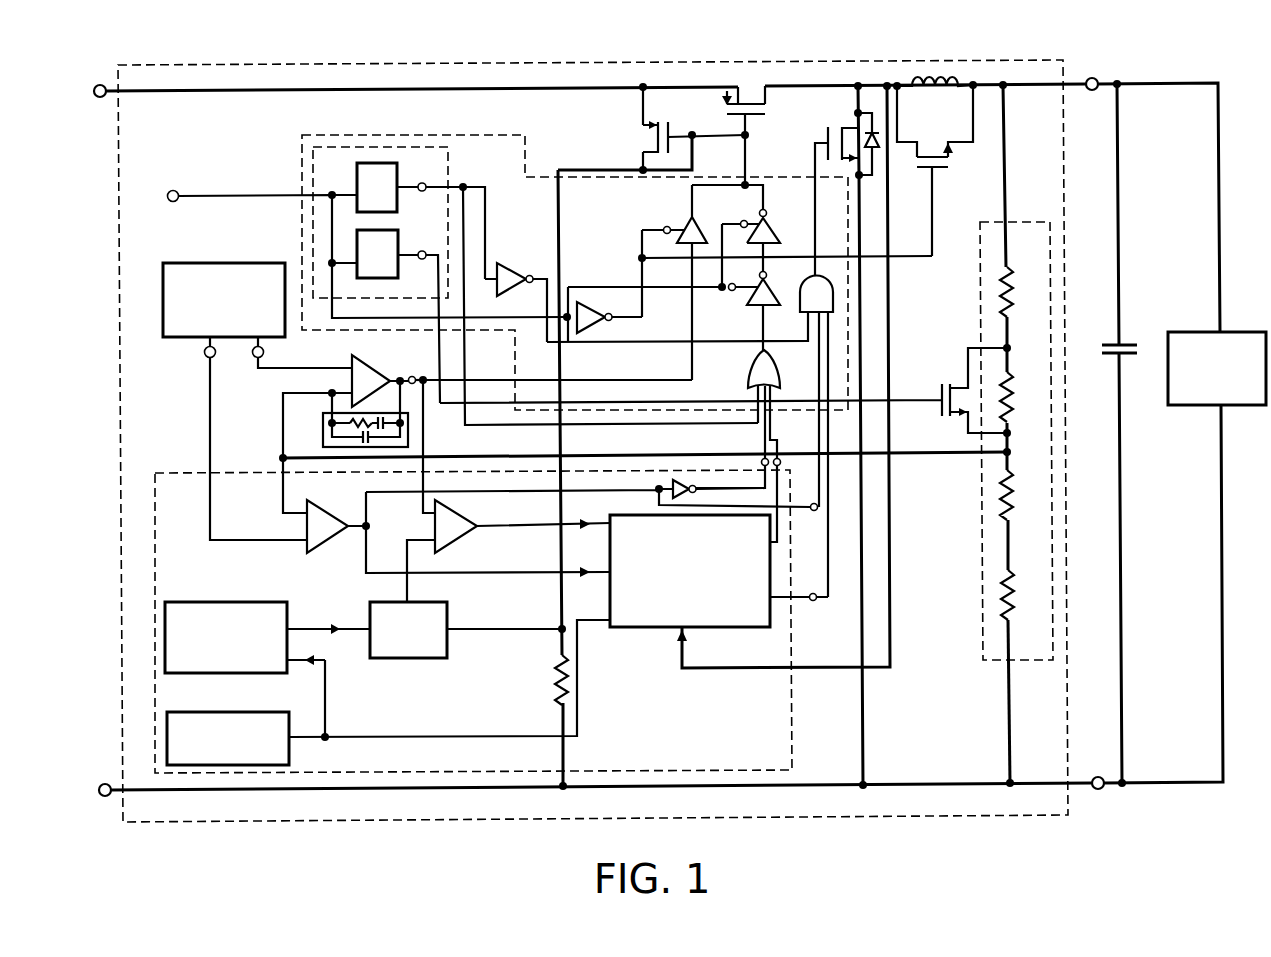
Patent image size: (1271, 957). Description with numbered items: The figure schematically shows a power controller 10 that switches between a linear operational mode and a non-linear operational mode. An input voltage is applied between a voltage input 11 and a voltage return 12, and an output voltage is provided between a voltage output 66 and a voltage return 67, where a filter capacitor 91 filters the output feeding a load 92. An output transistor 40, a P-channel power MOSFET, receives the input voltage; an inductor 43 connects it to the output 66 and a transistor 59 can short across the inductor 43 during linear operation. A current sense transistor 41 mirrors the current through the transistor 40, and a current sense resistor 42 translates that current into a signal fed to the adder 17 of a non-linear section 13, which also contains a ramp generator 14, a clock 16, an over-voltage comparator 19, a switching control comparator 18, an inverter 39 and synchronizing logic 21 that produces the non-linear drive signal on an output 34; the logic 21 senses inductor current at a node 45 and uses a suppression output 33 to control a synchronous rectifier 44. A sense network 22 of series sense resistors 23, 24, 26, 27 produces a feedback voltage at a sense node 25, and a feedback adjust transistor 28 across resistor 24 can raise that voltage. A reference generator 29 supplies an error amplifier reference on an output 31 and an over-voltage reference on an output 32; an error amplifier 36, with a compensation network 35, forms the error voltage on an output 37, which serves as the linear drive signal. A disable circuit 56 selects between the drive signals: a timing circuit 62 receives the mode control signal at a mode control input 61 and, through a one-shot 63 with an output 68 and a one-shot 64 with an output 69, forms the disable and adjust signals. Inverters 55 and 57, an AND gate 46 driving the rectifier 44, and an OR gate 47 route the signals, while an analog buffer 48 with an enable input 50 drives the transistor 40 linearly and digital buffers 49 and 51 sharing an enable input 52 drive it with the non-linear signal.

The power controller 10 is at (372, 822).
The voltage input 11 is at (95, 86).
The voltage return 12 is at (100, 796).
The non-linear section 13 is at (792, 752).
The ramp generator 14 is at (242, 602).
The clock 16 is at (225, 712).
The adder 17 is at (418, 659).
The switching control comparator 18 is at (480, 535).
The over-voltage comparator 19 is at (318, 550).
The synchronizing logic 21 is at (631, 630).
The sense network 22 is at (1027, 661).
The sense resistor 23 is at (1012, 300).
The sense resistor 24 is at (1011, 388).
The sense node 25 is at (1012, 450).
The sense resistor 26 is at (1012, 496).
The sense resistor 27 is at (1012, 596).
The feedback adjust transistor 28 is at (950, 386).
The reference generator 29 is at (242, 263).
The output 31 is at (253, 360).
The output 32 is at (205, 360).
The suppression output 33 is at (815, 603).
The output 34 is at (781, 458).
The compensation network 35 is at (410, 438).
The error amplifier 36 is at (350, 365).
The output 37 is at (410, 375).
The inverter 39 is at (682, 480).
The output transistor 40 is at (765, 116).
The current sense transistor 41 is at (644, 140).
The current sense resistor 42 is at (548, 687).
The inductor 43 is at (932, 74).
The synchronous rectifier 44 is at (830, 128).
The node 45 is at (878, 82).
The AND gate 46 is at (803, 275).
The OR gate 47 is at (778, 362).
The analog buffer 48 is at (688, 220).
The digital buffer 49 is at (755, 303).
The enable input 50 is at (663, 228).
The digital buffer 51 is at (779, 225).
The enable input 52 is at (734, 283).
The inverter 55 is at (612, 318).
The disable circuit 56 is at (892, 322).
The inverter 57 is at (508, 267).
The transistor 59 is at (948, 168).
The mode control input 61 is at (170, 190).
The timing circuit 62 is at (450, 149).
The one-shot 63 is at (357, 170).
The one-shot 64 is at (385, 278).
The voltage output 66 is at (1098, 78).
The voltage return 67 is at (1104, 790).
The output 68 is at (422, 183).
The output 69 is at (423, 251).
The filter capacitor 91 is at (1126, 360).
The load 92 is at (1192, 331).